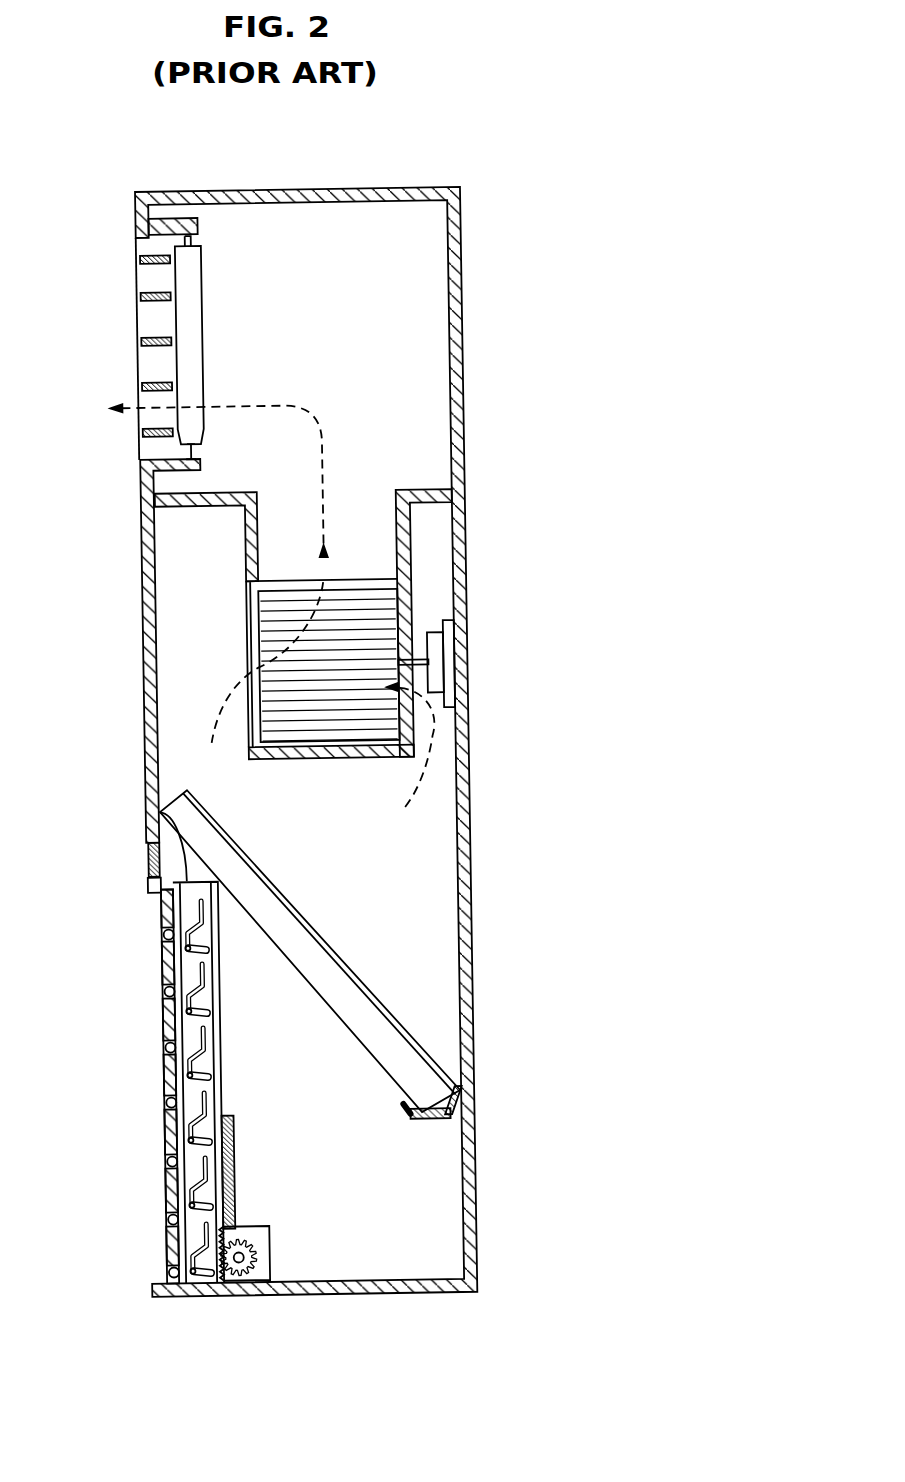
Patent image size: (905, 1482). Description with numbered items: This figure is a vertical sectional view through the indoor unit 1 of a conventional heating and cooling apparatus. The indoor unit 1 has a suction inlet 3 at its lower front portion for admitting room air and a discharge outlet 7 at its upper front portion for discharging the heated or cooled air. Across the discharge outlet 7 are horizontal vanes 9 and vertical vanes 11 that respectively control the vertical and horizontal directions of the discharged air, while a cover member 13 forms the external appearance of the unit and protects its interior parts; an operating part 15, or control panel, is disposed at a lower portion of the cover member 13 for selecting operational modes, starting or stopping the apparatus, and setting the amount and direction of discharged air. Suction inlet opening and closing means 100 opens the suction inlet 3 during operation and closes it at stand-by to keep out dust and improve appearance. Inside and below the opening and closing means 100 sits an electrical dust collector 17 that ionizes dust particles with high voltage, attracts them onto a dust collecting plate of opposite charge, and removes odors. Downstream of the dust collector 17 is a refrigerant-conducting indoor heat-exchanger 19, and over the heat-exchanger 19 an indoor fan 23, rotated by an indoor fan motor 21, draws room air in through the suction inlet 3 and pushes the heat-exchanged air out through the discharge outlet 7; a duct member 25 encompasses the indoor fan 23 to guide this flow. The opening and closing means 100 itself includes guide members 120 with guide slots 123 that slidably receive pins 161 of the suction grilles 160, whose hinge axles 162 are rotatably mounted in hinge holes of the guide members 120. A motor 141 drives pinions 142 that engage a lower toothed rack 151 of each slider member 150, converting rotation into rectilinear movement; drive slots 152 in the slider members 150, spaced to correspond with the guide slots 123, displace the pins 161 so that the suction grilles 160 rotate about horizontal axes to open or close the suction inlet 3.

The indoor unit 1 is at (470, 850).
The suction inlet 3 is at (140, 925).
The discharge outlet 7 is at (157, 363).
The horizontal vanes 9 is at (137, 295).
The vertical vanes 11 is at (188, 273).
The cover member 13 is at (150, 635).
The operating part 15 is at (149, 851).
The electrical dust collector 17 is at (232, 1192).
The indoor heat-exchanger 19 is at (290, 920).
The indoor fan motor 21 is at (445, 663).
The indoor fan 23 is at (382, 617).
The duct member 25 is at (407, 540).
The suction inlet opening and closing means 100 is at (155, 1036).
The guide members 120 is at (216, 1010).
The guide slots 123 is at (190, 945).
The motor 141 is at (268, 1267).
The pinions 142 is at (252, 1268).
The slider members 150 is at (147, 825).
The toothed rack 151 is at (238, 1292).
The drive slots 152 is at (163, 962).
The suction grilles 160 is at (166, 1190).
The pins 161 is at (213, 1067).
The hinge axles 162 is at (166, 1103).